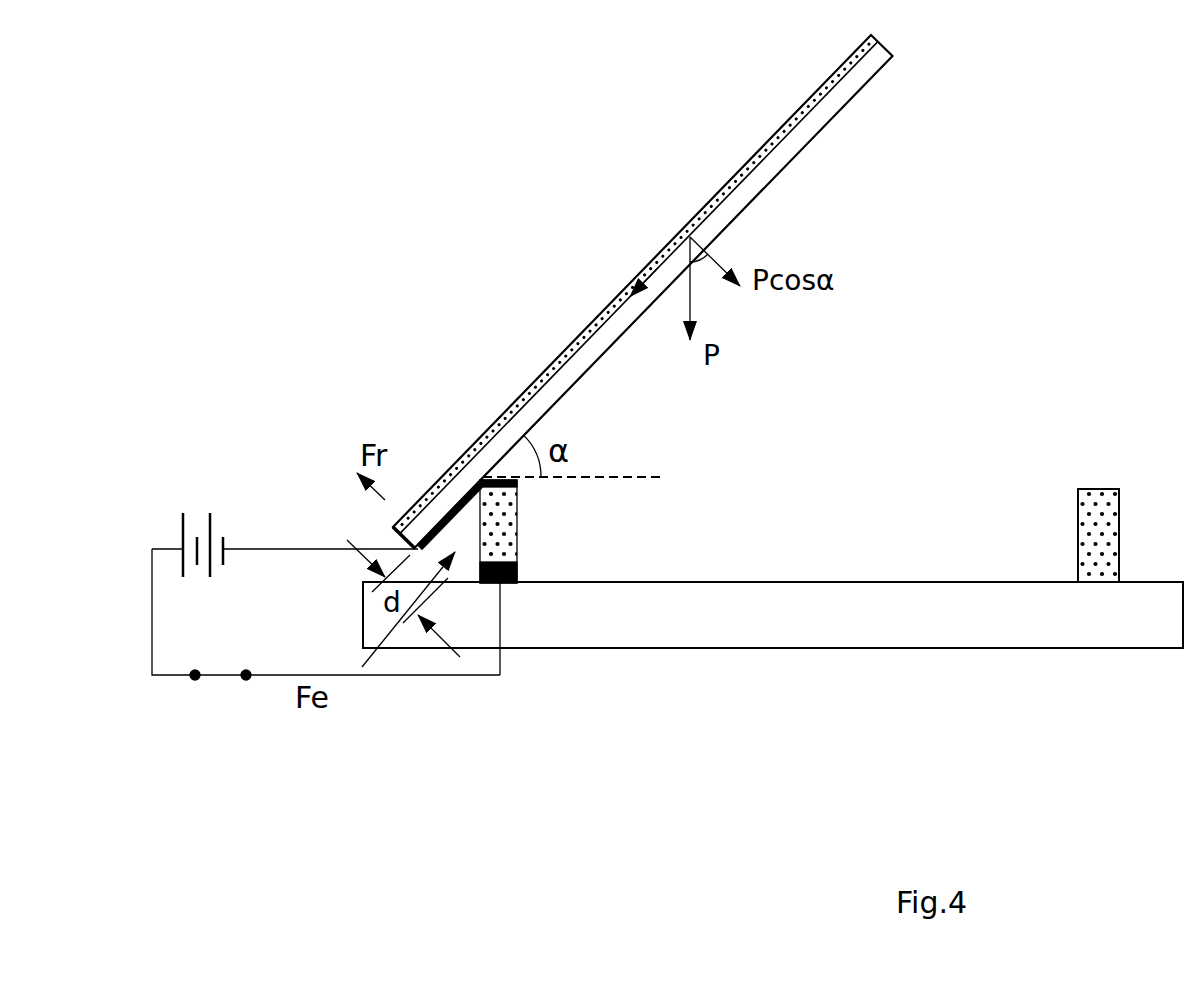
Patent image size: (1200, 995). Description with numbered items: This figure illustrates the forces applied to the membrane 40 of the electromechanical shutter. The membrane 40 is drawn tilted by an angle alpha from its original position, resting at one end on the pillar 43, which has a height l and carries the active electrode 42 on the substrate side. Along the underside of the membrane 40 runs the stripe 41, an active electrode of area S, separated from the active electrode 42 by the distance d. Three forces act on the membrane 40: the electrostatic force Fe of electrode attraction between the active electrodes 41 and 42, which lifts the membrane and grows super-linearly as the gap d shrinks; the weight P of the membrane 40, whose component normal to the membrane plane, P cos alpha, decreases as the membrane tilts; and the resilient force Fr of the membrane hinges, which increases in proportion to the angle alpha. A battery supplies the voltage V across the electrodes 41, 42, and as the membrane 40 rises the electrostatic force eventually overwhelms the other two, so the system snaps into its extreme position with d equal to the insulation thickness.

The membrane 40 is at (840, 127).
The stripe 41 is at (441, 526).
The active electrode 42 is at (520, 566).
The pillar 43 is at (513, 508).